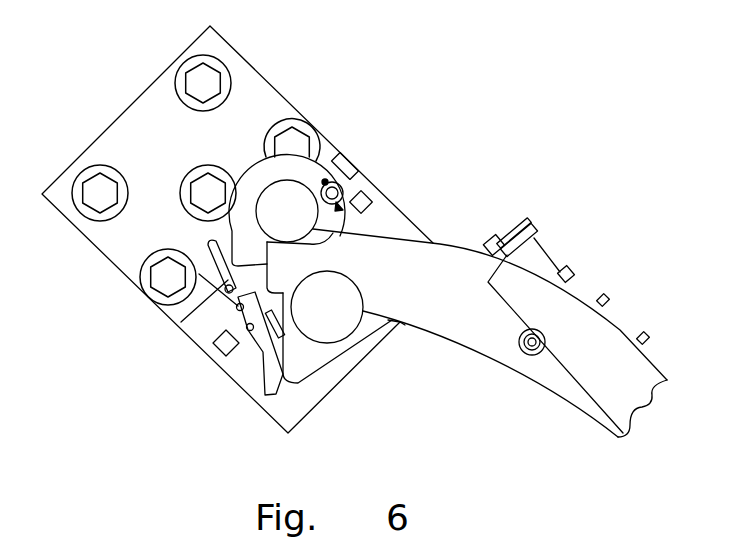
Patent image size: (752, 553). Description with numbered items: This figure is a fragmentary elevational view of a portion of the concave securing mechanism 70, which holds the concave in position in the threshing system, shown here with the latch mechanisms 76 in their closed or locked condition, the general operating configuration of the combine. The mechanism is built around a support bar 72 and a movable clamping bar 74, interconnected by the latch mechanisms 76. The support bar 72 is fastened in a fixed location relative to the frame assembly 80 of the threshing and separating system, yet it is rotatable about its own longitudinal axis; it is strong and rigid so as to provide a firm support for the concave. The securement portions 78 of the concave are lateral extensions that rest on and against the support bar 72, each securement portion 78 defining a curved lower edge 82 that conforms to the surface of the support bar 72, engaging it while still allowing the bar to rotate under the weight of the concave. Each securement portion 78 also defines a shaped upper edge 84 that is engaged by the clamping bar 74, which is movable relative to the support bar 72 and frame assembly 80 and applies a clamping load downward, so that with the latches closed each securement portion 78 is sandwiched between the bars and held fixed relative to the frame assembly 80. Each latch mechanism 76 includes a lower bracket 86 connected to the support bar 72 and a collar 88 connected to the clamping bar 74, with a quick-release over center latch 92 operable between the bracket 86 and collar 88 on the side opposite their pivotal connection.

The concave securing mechanism 70 is at (400, 156).
The support bar 72 is at (330, 312).
The clamping bar 74 is at (290, 205).
The latch mechanisms 76 is at (296, 410).
The securement portions 78 is at (325, 260).
The frame assembly 80 is at (120, 147).
The curved lower edge 82 is at (343, 262).
The shaped upper edge 84 is at (343, 240).
The lower bracket 86 is at (327, 355).
The collar 88 is at (248, 168).
The over center latch 92 is at (252, 340).